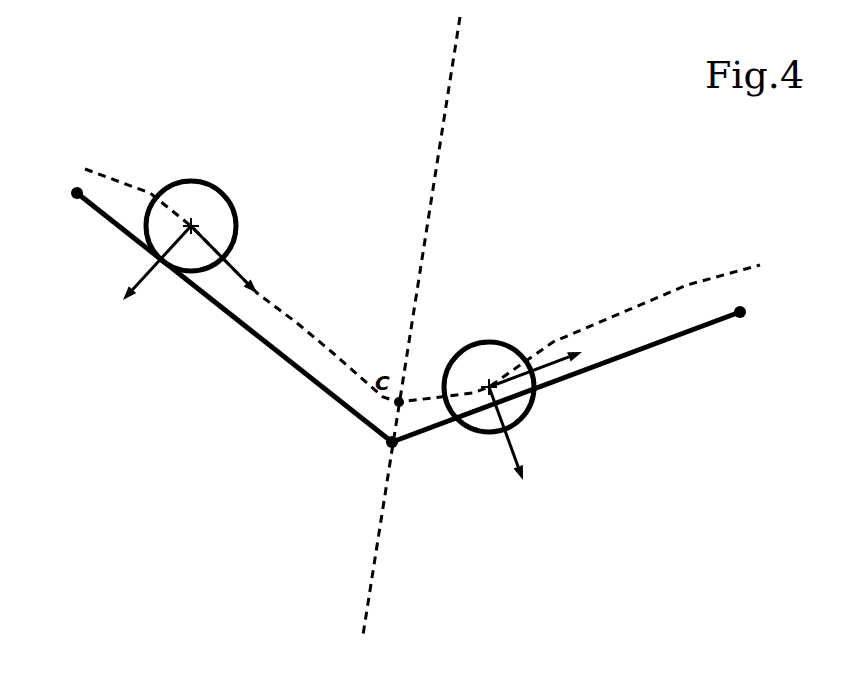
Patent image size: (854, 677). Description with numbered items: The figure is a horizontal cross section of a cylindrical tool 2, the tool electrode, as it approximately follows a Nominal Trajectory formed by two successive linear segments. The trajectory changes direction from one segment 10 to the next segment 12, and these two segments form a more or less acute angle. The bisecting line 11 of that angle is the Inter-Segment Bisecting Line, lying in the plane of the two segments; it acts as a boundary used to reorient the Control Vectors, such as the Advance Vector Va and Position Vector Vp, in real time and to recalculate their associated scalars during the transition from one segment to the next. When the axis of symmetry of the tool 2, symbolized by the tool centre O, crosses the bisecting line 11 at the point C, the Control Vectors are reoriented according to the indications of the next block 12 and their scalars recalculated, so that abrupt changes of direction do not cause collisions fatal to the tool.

The tool 2 is at (191, 180).
The segment 10 is at (258, 345).
The bisecting line 11 is at (425, 223).
The segment 12 is at (642, 353).